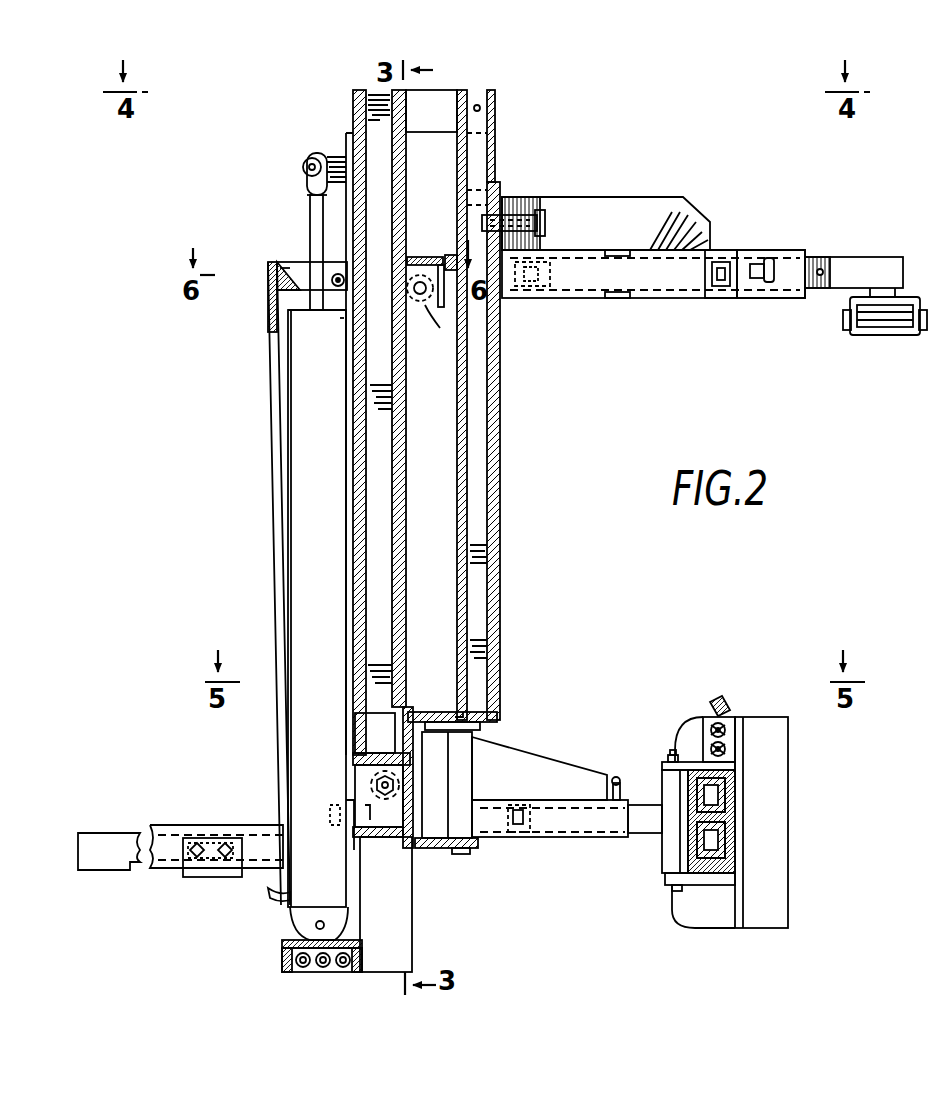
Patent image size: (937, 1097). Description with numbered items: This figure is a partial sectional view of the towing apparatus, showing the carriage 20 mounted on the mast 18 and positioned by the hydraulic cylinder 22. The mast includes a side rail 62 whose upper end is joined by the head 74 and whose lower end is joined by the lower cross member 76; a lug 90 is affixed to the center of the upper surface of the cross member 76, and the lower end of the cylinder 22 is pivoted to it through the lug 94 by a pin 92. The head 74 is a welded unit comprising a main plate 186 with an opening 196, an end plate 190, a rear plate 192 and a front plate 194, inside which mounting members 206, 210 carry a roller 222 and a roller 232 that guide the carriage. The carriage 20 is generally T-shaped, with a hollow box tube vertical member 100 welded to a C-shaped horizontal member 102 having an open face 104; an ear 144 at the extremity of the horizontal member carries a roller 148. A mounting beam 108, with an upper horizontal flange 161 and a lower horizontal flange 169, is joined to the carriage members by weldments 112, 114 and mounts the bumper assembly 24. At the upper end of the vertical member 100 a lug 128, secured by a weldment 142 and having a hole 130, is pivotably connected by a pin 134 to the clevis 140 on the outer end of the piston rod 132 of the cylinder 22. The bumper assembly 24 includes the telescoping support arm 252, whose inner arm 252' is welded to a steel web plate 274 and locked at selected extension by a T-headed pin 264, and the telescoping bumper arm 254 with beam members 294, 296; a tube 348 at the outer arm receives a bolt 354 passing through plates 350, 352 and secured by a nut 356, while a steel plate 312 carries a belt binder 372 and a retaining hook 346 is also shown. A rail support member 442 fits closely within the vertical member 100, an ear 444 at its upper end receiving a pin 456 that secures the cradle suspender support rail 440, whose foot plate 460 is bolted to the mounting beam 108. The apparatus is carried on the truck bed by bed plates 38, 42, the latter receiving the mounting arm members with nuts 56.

The mast 18 is at (262, 550).
The carriage 20 is at (508, 544).
The hydraulic cylinder 22 is at (305, 484).
The bumper assembly 24 is at (688, 700).
The bed plate 38 is at (100, 870).
The large bed plate 42 is at (192, 876).
The nuts 56 is at (224, 842).
The side rail 62 is at (297, 312).
The head 74 is at (262, 358).
The lower cross member 76 is at (362, 945).
The lug 90 is at (290, 930).
The pin 92 is at (290, 960).
The lug 94 is at (312, 912).
The vertical member 100 is at (350, 424).
The horizontal member 102 is at (388, 845).
The open face 104 is at (345, 746).
The mounting beam 108 is at (433, 852).
The weldment 112 is at (425, 800).
The weldment 114 is at (406, 722).
The lug 128 is at (305, 155).
The hole 130 is at (300, 166).
The piston rod 132 is at (312, 232).
The pin 134 is at (302, 175).
The clevis 140 is at (308, 188).
The weldment 142 is at (342, 150).
The ear 144 is at (352, 845).
The roller 148 is at (345, 800).
The upper horizontal flange 161 is at (478, 726).
The lower horizontal flange 169 is at (482, 848).
The main plate 186 is at (268, 262).
The end plate 190 is at (418, 305).
The rear plate 192 is at (455, 312).
The front plate 194 is at (268, 332).
The opening 196 is at (275, 300).
The mounting member 206 is at (430, 262).
The mounting member 210 is at (270, 283).
The roller 222 is at (336, 322).
The roller 232 is at (440, 328).
The support arm 252 is at (571, 804).
The inner arm 252' is at (550, 852).
The bumper arm 254 is at (748, 832).
The T-headed pin 264 is at (617, 785).
The steel web plate 274 is at (562, 794).
The beam member 294 is at (738, 782).
The beam member 296 is at (738, 866).
The steel plate 312 is at (740, 920).
The retaining hook 346 is at (716, 712).
The tube 348 is at (668, 884).
The steel plate 350 is at (738, 768).
The steel plate 352 is at (732, 880).
The bolt 354 is at (670, 756).
The nut 356 is at (680, 893).
The belt binder 372 is at (738, 712).
The cradle suspender support rail 440 is at (497, 148).
The rail support member 442 is at (400, 612).
The ear 444 is at (444, 122).
The pin 456 is at (482, 108).
The foot plate 460 is at (493, 716).